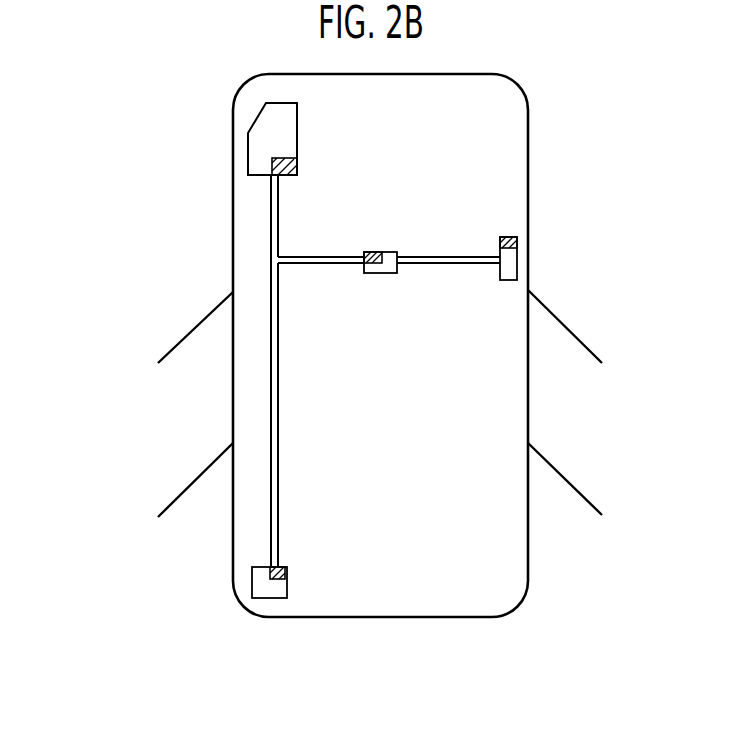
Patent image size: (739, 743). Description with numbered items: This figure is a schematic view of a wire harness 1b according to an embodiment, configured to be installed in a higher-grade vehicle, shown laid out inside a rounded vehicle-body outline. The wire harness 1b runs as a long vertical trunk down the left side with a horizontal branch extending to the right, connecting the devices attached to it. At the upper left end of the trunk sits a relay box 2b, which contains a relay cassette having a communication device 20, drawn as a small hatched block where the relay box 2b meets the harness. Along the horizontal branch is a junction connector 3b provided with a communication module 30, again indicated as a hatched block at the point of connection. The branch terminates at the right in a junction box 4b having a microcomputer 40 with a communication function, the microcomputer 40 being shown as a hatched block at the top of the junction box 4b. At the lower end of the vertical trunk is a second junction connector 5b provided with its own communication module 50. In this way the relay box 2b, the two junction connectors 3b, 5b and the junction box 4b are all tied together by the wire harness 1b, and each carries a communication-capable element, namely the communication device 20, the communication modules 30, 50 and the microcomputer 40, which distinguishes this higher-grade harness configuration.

The wire harness 1b is at (264, 252).
The relay box 2b is at (257, 143).
The communication device 20 is at (297, 166).
The junction connector 3b is at (388, 273).
The communication module 30 is at (375, 252).
The junction box 4b is at (513, 265).
The microcomputer 40 is at (507, 237).
The junction connector 5b is at (252, 587).
The communication module 50 is at (285, 570).